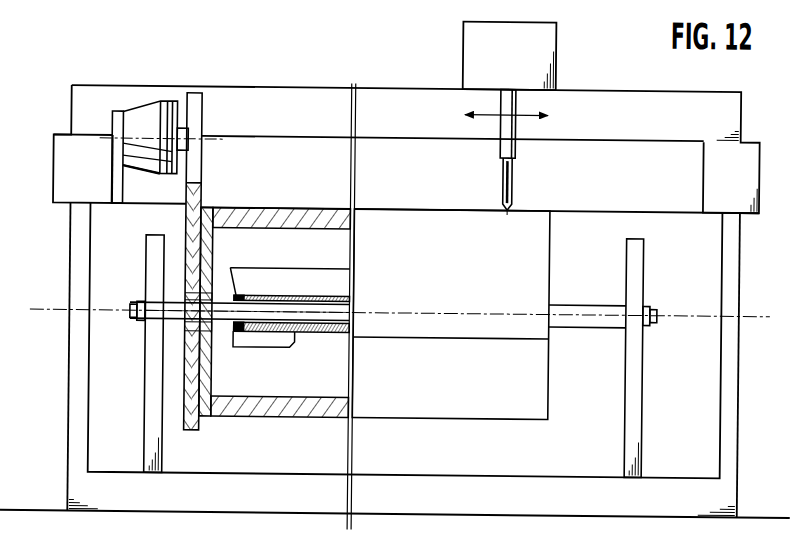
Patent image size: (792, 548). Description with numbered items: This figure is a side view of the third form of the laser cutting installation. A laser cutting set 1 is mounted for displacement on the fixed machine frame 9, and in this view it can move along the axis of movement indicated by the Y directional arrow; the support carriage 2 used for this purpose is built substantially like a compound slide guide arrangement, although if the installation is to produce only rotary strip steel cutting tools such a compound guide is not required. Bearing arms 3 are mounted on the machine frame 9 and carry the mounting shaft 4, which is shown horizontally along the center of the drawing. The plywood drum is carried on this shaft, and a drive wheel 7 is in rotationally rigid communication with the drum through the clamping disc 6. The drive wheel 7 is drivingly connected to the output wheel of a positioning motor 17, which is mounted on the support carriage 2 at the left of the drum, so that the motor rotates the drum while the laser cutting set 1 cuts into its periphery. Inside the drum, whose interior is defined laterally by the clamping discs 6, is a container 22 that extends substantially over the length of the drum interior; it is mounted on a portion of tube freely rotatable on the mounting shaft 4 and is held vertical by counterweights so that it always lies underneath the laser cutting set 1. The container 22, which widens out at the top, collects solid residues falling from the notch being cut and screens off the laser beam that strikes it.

The laser cutting set 1 is at (512, 185).
The support carriage 2 is at (536, 43).
The bearing arms 3 is at (155, 440).
The mounting shaft 4 is at (565, 312).
The clamping disc 6 is at (200, 384).
The drive wheel 7 is at (185, 211).
The machine frame 9 is at (715, 495).
The positioning motor 17 is at (143, 119).
The container 22 is at (285, 275).